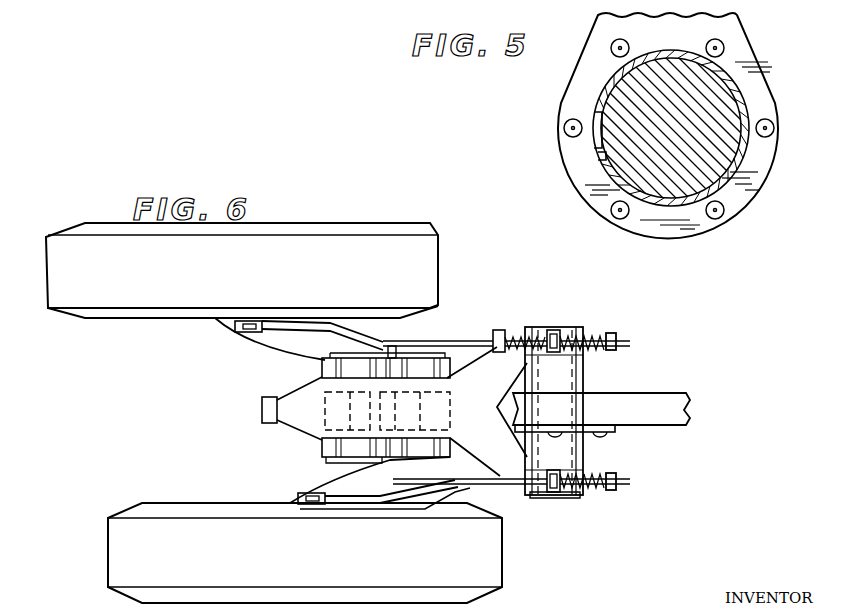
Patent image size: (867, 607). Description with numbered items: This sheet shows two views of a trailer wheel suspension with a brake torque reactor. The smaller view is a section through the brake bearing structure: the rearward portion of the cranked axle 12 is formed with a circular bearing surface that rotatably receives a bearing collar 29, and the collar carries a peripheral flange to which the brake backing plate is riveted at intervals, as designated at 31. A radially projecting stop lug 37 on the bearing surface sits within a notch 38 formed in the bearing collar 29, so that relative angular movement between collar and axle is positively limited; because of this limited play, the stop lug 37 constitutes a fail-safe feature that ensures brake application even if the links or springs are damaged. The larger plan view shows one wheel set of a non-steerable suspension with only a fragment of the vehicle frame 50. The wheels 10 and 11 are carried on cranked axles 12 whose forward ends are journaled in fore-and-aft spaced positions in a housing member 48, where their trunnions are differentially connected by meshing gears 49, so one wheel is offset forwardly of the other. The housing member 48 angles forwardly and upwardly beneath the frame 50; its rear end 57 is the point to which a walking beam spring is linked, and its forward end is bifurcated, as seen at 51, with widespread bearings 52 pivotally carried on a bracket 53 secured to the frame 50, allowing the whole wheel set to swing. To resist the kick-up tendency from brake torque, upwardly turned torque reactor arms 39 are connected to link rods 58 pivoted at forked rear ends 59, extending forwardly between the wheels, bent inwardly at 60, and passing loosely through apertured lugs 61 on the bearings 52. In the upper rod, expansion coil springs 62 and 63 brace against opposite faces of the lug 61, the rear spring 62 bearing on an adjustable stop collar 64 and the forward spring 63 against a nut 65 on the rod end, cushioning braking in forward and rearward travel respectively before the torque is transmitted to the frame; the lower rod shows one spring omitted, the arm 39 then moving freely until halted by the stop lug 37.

In FIG. 6, the wheel 10 is at (92, 318).
In FIG. 6, the wheel 11 is at (108, 555).
In FIG. 6, the cranked axle 12 is at (312, 320).
In FIG. 5, the bearing collar 29 is at (765, 84).
In FIG. 5, the rivets 31 is at (725, 210).
In FIG. 5, the stop lug 37 is at (590, 136).
In FIG. 5, the notch 38 is at (598, 165).
In FIG. 6, the torque reactor arm 39 is at (243, 328).
In FIG. 6, the housing member 48 is at (308, 438).
In FIG. 6, the meshing gears 49 is at (407, 347).
In FIG. 6, the frame 50 is at (692, 408).
In FIG. 6, the bifurcated forward end 51 is at (480, 446).
In FIG. 6, the bearings 52 is at (583, 360).
In FIG. 6, the bracket 53 is at (615, 434).
In FIG. 6, the rear end of housing 57 is at (263, 412).
In FIG. 6, the link rod 58 is at (470, 332).
In FIG. 6, the forked rear end 59 is at (250, 333).
In FIG. 6, the inward bend 60 is at (398, 508).
In FIG. 6, the apertured lug 61 is at (557, 330).
In FIG. 6, the rear expansion coil spring 62 is at (534, 330).
In FIG. 6, the forward expansion coil spring 63 is at (590, 332).
In FIG. 6, the adjustable stop collar 64 is at (497, 352).
In FIG. 6, the nut 65 is at (617, 340).